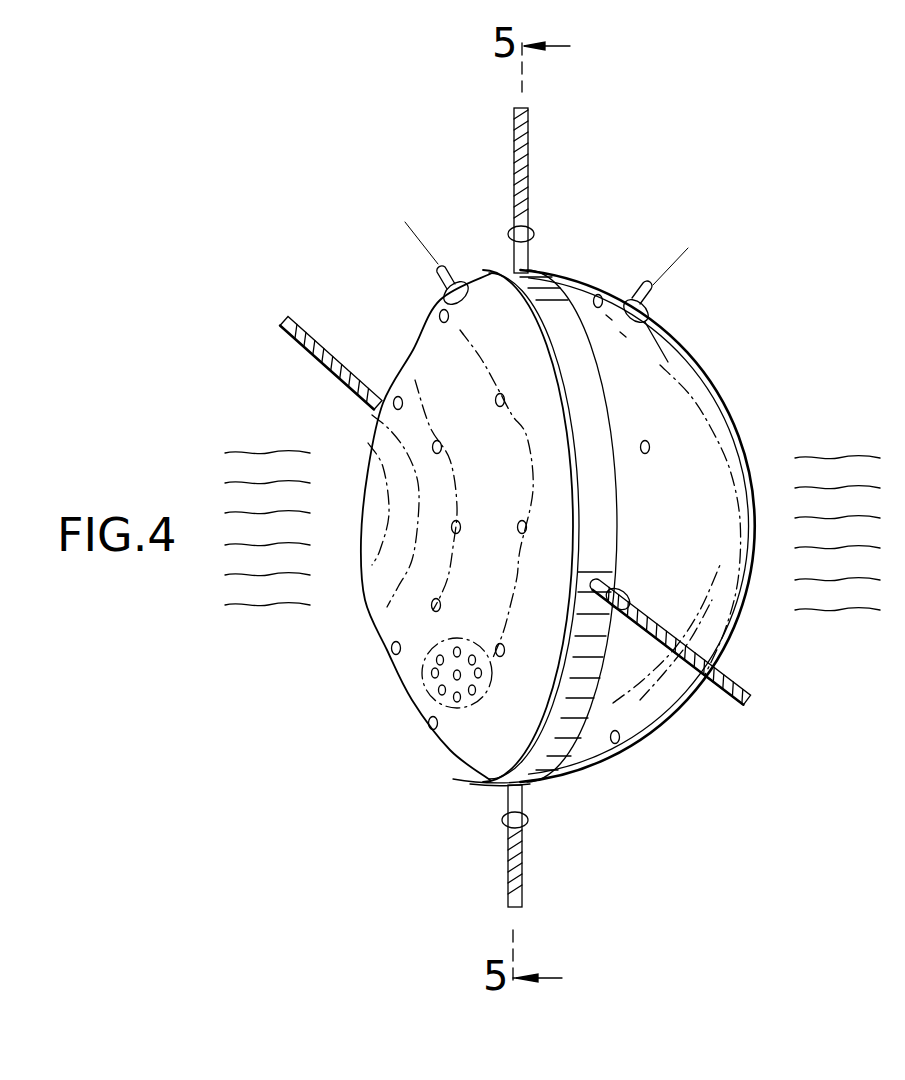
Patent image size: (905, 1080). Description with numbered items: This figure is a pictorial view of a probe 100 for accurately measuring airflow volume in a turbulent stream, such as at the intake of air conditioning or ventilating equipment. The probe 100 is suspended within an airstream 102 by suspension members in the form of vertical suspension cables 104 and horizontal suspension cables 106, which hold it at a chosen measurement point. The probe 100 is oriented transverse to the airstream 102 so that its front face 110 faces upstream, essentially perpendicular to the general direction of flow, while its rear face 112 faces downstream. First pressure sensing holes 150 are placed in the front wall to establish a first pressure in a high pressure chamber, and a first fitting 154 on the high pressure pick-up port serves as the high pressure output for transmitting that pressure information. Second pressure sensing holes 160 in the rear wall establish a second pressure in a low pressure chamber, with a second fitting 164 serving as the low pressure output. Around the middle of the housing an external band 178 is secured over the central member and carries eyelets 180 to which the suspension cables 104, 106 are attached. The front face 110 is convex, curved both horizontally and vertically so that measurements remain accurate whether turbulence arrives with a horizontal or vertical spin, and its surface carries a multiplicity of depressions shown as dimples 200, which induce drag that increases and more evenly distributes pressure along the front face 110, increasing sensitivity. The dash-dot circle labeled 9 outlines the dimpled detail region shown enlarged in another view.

The detail circle 9 is at (430, 693).
The probe 100 is at (727, 366).
The airstream 102 is at (258, 603).
The vertical suspension cables 104 is at (529, 166).
The horizontal suspension cables 106 is at (292, 340).
The front face 110 is at (375, 445).
The rear face 112 is at (735, 444).
The first pressure sensing holes 150 is at (444, 449).
The first fitting 154 is at (436, 273).
The second pressure sensing holes 160 is at (649, 452).
The second fitting 164 is at (657, 298).
The external band 178 is at (505, 785).
The eyelets 180 is at (534, 236).
The dimples 200 is at (460, 703).